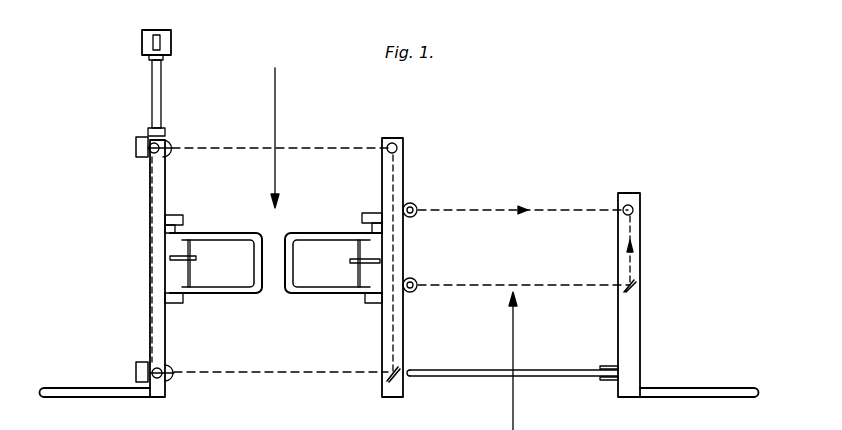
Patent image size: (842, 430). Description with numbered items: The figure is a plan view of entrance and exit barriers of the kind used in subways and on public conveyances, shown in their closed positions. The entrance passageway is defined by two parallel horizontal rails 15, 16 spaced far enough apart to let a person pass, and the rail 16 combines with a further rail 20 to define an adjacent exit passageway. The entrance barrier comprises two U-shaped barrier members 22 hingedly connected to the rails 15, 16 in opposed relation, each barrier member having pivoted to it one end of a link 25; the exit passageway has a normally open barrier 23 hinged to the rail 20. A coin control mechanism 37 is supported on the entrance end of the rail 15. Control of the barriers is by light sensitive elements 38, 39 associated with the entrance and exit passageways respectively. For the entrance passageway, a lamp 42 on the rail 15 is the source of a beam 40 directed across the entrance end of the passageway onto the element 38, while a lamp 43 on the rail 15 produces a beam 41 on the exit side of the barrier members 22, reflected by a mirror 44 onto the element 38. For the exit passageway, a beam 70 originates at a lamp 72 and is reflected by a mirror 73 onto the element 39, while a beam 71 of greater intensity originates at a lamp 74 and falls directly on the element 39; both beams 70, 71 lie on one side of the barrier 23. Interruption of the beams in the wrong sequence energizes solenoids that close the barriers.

The horizontal rail 15 is at (150, 188).
The horizontal rail 16 is at (405, 252).
The rail 20 is at (643, 320).
The barrier members 22 is at (260, 293).
The exit barrier 23 is at (478, 370).
The link 25 is at (180, 258).
The coin control mechanism 37 is at (172, 46).
The light sensitive element 38 is at (393, 141).
The light sensitive element 39 is at (634, 208).
The beam of light 40 is at (232, 148).
The beam of light 41 is at (275, 372).
The lamp 42 is at (146, 140).
The lamp 43 is at (168, 378).
The mirror 44 is at (393, 398).
The beam of light 70 is at (510, 285).
The beam of light 71 is at (512, 210).
The lamp 72 is at (416, 293).
The mirror 73 is at (643, 283).
The lamp 74 is at (417, 204).